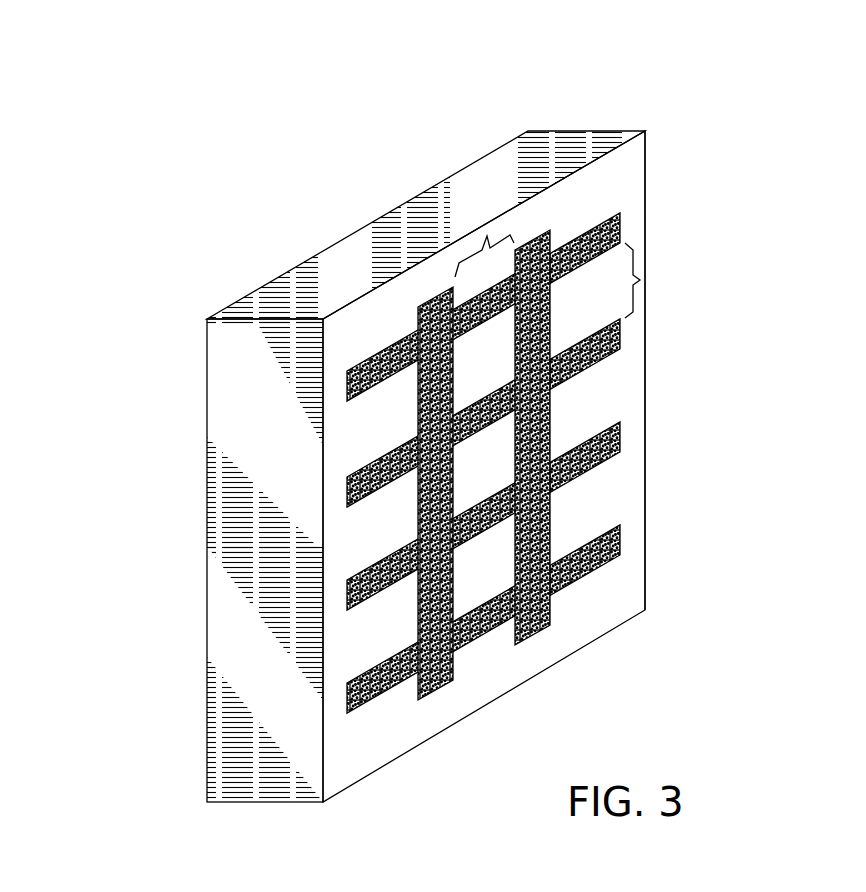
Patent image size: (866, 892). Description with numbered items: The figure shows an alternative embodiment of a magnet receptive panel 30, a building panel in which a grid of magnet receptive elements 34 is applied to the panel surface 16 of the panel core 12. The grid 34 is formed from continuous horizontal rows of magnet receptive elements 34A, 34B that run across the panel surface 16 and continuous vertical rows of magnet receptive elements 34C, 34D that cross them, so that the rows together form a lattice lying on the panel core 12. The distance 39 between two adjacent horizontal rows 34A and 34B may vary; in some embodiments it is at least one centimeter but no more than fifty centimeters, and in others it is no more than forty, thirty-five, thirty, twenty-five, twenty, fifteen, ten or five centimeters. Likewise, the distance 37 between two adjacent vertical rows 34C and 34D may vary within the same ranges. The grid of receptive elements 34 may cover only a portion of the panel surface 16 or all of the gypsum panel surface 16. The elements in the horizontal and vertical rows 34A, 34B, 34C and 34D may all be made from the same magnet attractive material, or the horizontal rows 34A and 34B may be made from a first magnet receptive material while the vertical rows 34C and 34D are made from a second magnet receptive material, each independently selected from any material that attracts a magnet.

The magnet receptive panel 30 is at (735, 122).
The panel core 12 is at (234, 551).
The panel surface 16 is at (397, 733).
The grid of magnet receptive elements 34 is at (456, 517).
The horizontal row of magnet receptive elements 34A is at (620, 232).
The horizontal row of magnet receptive elements 34B is at (620, 337).
The vertical row of magnet receptive elements 34C is at (427, 693).
The vertical row of magnet receptive elements 34D is at (551, 615).
The distance between adjacent vertical rows 37 is at (485, 237).
The distance between adjacent horizontal rows 39 is at (641, 280).